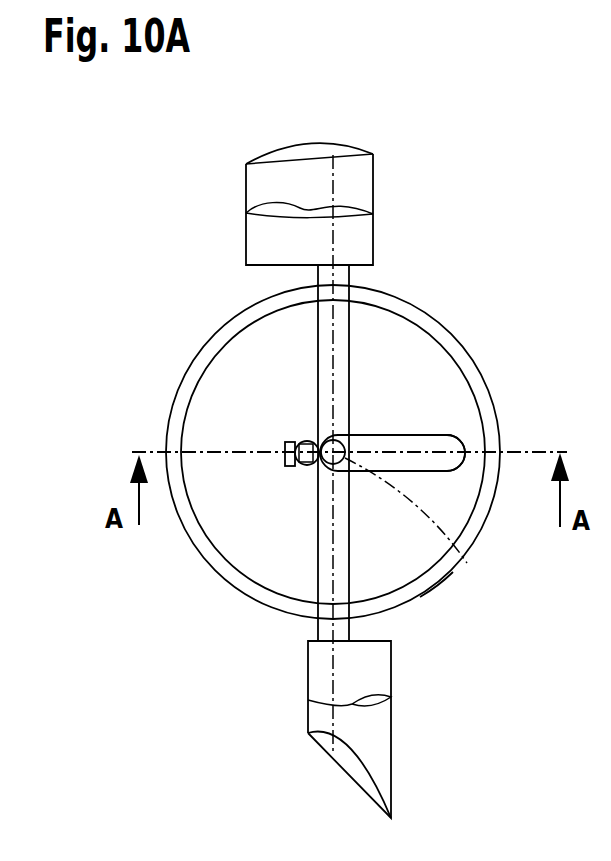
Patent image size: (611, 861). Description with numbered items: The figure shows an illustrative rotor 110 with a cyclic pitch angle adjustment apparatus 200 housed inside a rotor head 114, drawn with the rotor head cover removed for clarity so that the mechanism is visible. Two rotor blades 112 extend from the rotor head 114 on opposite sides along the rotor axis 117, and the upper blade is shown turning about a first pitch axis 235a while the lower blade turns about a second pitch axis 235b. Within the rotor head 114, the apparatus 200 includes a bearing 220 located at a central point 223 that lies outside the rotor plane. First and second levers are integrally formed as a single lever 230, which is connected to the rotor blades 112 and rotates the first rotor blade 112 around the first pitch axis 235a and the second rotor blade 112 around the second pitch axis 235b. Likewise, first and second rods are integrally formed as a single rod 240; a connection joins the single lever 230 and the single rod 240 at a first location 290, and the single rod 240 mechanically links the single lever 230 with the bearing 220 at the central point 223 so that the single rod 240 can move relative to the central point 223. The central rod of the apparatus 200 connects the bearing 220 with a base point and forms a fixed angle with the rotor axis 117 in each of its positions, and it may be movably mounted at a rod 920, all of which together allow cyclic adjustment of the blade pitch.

The rotor 110 is at (129, 205).
The rotor blade 112 is at (350, 227).
The rotor head 114 is at (453, 572).
The rotor axis 117 is at (467, 563).
The cyclic pitch angle adjustment apparatus 200 is at (477, 311).
The bearing 220 is at (294, 438).
The central point 223 is at (297, 411).
The single lever 230 is at (403, 437).
The single rod 240 is at (308, 470).
The first location 290 is at (471, 421).
The rod 920 is at (294, 470).
The first pitch axis 235a is at (335, 190).
The second pitch axis 235b is at (312, 718).